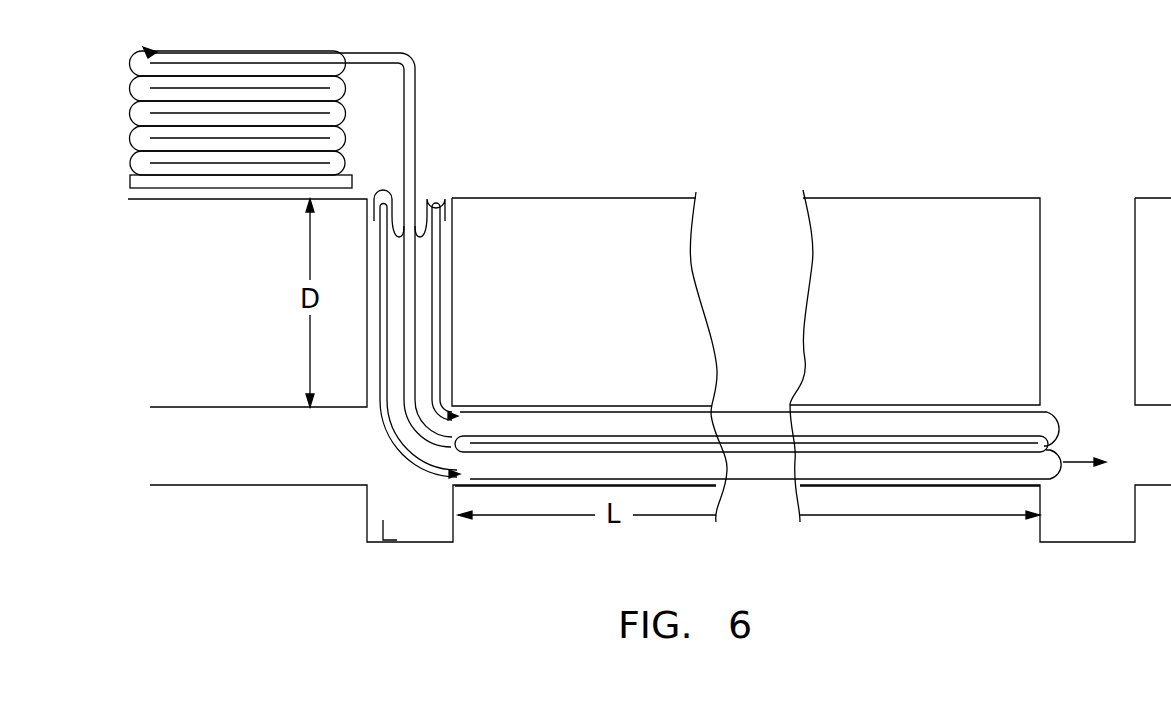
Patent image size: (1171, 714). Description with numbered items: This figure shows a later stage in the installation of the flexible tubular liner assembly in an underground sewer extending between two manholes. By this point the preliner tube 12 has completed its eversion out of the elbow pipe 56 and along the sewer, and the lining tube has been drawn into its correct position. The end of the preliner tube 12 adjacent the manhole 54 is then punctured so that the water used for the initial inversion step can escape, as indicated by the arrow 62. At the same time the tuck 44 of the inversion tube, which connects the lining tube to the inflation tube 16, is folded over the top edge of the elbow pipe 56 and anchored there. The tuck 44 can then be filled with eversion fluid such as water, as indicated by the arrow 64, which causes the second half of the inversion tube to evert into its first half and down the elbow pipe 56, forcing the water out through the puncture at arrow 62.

The inflation tube 16 is at (215, 147).
The tuck 44 is at (385, 184).
The arrow (eversion fluid filling) 64 is at (427, 181).
The elbow pipe 56 is at (438, 273).
The manhole 54 is at (1040, 340).
The preliner tube 12 is at (1057, 419).
The arrow (water release / puncture) 62 is at (1080, 468).